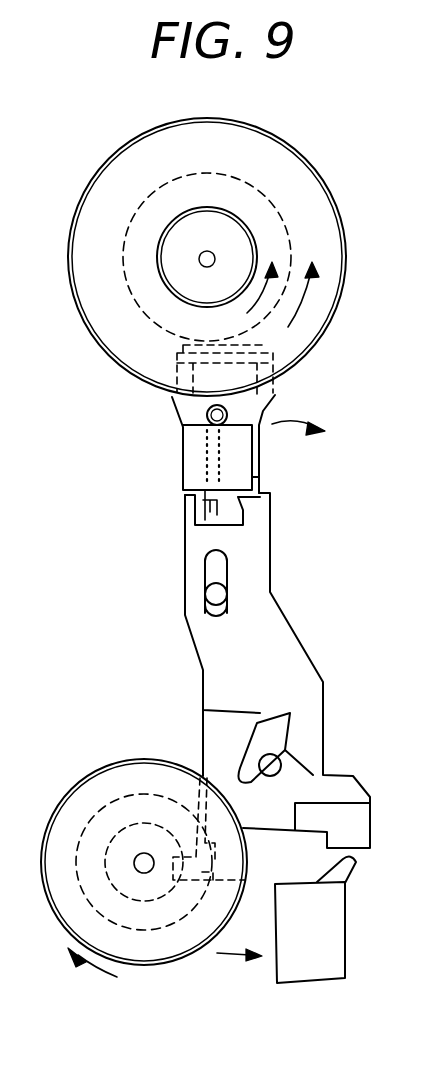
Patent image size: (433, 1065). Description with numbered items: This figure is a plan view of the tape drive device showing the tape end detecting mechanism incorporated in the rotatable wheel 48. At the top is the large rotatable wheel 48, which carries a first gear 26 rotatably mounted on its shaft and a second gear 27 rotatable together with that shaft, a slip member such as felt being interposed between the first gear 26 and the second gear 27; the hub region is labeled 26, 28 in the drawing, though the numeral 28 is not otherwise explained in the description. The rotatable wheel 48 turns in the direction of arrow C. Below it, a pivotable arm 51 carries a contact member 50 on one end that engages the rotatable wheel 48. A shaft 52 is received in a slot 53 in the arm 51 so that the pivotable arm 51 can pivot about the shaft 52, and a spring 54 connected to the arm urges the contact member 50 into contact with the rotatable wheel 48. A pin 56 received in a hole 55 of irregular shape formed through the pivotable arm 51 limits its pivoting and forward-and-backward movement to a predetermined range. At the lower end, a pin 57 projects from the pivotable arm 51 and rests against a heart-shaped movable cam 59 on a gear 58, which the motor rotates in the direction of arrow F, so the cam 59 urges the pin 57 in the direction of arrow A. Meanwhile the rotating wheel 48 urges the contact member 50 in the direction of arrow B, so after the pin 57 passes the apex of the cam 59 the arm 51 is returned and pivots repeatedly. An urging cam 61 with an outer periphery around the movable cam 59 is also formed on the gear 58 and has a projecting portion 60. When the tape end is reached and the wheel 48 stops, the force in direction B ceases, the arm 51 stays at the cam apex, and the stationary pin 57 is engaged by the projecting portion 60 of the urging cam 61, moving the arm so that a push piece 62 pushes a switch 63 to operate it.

The second gear 27 is at (283, 173).
The first gear 26 is at (233, 255).
The hub 28 is at (233, 255).
The rotatable wheel 48 is at (122, 241).
The contact member 50 is at (270, 353).
The spring 54 is at (197, 453).
The pivotable arm 51 is at (278, 647).
The slot 53 is at (228, 562).
The shaft 52 is at (218, 592).
The hole 55 is at (277, 732).
The pin 56 is at (272, 768).
The push piece 62 is at (352, 828).
The switch 63 is at (323, 952).
The gear 58 is at (57, 813).
The movable cam 59 is at (134, 866).
The urging cam 61 is at (108, 800).
The pin 57 is at (172, 882).
The projecting portion 60 is at (197, 930).
The arrow A is at (239, 943).
The arrow B is at (298, 439).
The arrow C is at (307, 303).
The arrow F is at (92, 976).